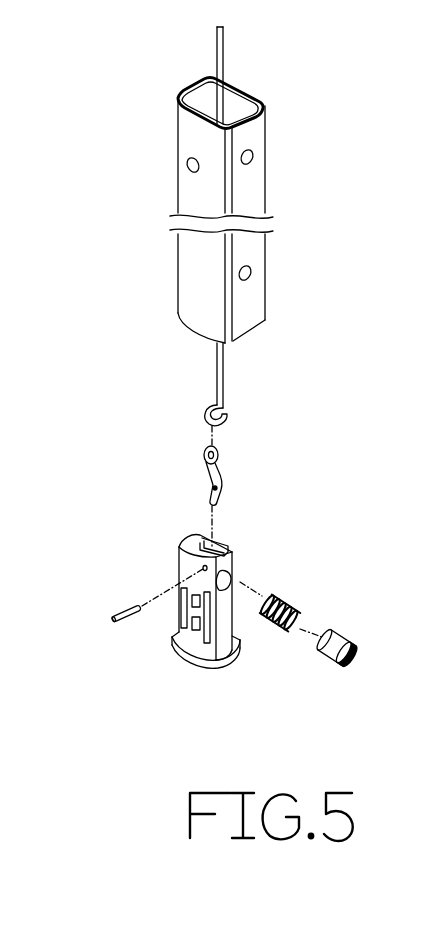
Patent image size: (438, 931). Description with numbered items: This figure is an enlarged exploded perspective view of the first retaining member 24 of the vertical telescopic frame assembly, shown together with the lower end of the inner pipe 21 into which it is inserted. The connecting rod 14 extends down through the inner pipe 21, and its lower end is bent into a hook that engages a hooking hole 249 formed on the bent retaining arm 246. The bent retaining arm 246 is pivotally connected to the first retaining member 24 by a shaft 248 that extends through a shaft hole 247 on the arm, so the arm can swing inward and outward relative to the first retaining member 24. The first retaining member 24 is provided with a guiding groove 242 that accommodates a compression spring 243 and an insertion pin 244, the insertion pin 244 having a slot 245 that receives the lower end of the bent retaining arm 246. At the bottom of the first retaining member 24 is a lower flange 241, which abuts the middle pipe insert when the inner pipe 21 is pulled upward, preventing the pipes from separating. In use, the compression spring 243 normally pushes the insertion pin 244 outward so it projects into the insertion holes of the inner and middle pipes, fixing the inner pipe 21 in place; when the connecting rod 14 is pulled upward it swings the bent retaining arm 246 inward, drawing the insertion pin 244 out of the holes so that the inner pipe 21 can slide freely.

The connecting rod 14 is at (224, 46).
The inner pipe 21 is at (248, 252).
The first retaining member 24 is at (187, 560).
The lower flange 241 is at (228, 655).
The guiding groove 242 is at (240, 575).
The compression spring 243 is at (291, 603).
The insertion pin 244 is at (323, 666).
The slot 245 is at (341, 635).
The bent retaining arm 246 is at (224, 477).
The shaft hole 247 is at (212, 488).
The shaft 248 is at (130, 608).
The hooking hole 249 is at (220, 455).